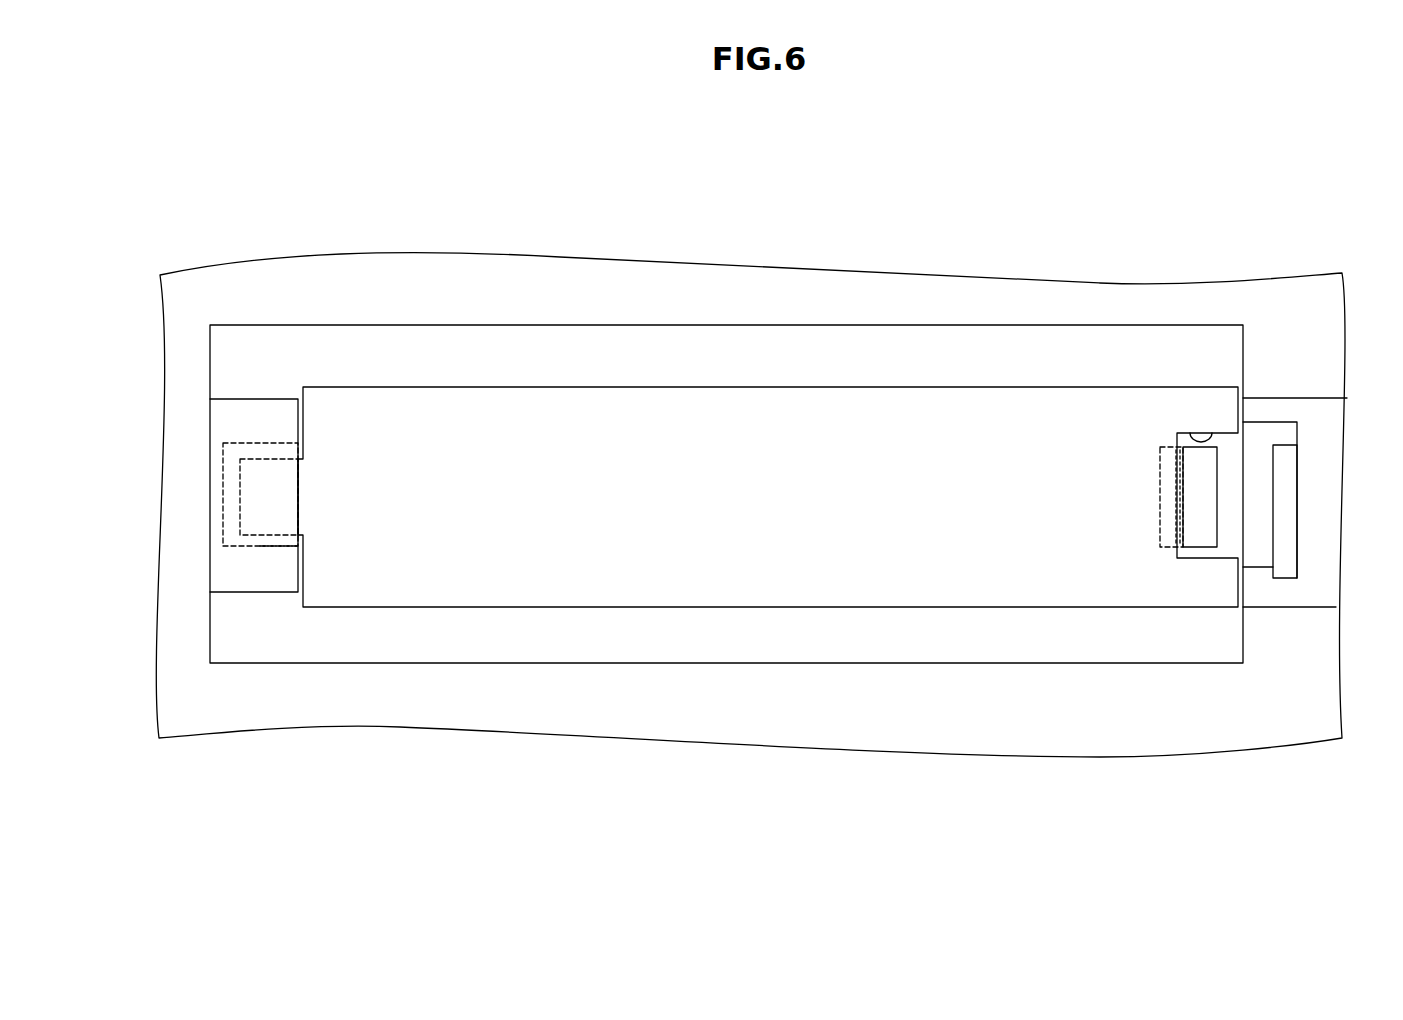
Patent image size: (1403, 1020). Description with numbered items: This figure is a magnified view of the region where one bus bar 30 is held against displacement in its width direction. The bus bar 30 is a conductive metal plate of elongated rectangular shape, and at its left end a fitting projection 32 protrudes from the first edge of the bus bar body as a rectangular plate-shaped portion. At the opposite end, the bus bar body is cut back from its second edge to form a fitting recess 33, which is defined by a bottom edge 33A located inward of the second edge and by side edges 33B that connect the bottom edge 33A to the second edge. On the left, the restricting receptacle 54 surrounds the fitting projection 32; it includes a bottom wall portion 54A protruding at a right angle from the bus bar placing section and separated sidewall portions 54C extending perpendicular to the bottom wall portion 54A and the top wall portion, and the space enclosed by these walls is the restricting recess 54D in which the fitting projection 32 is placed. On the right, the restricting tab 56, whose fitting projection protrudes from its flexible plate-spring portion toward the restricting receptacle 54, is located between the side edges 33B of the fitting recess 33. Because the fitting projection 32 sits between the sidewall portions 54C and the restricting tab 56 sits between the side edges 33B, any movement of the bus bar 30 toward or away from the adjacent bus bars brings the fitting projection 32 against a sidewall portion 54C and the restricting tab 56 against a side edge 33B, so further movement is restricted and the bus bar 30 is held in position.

The bus bar 30 is at (752, 432).
The fitting projection 32 is at (270, 450).
The fitting recess 33 is at (1230, 449).
The bottom edge 33A is at (1187, 485).
The side edges 33B is at (1203, 436).
The restricting receptacle 54 is at (226, 388).
The bottom wall portion 54A is at (215, 495).
The sidewall portions 54C is at (253, 412).
The restricting recess 54D is at (260, 547).
The restricting tab 56 is at (1210, 487).